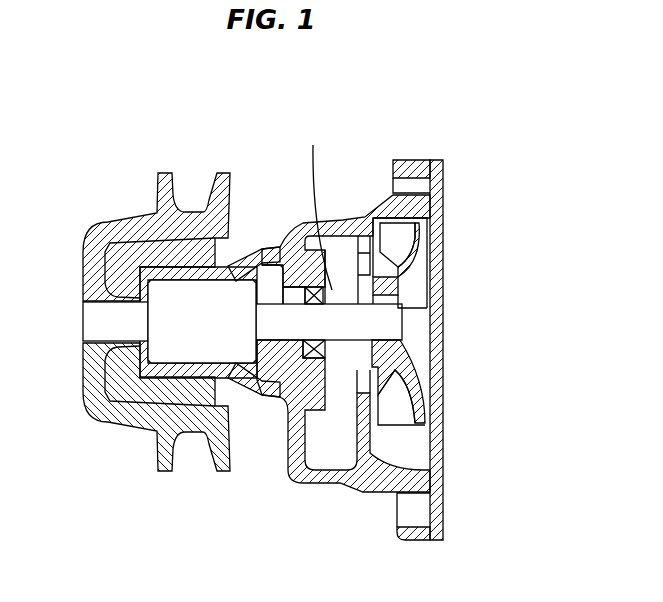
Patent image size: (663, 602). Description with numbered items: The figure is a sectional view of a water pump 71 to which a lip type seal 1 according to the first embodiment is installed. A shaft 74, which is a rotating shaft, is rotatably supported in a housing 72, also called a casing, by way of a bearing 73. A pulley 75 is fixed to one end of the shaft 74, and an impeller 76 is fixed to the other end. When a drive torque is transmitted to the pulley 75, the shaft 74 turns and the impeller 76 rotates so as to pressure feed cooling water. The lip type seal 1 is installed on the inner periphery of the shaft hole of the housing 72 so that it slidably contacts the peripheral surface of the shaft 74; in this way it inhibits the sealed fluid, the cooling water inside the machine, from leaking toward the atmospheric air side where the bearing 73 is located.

The lip type seal 1 is at (332, 290).
The water pump 71 is at (197, 167).
The housing 72 is at (330, 478).
The bearing 73 is at (173, 345).
The shaft 74 is at (278, 325).
The pulley 75 is at (127, 228).
The impeller 76 is at (417, 248).